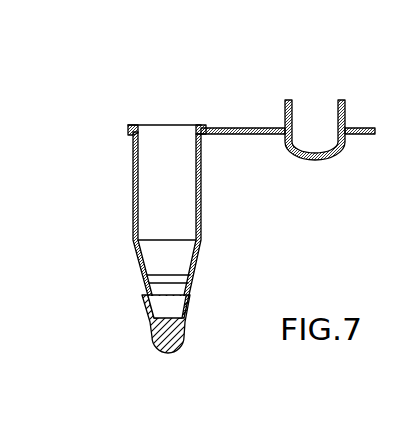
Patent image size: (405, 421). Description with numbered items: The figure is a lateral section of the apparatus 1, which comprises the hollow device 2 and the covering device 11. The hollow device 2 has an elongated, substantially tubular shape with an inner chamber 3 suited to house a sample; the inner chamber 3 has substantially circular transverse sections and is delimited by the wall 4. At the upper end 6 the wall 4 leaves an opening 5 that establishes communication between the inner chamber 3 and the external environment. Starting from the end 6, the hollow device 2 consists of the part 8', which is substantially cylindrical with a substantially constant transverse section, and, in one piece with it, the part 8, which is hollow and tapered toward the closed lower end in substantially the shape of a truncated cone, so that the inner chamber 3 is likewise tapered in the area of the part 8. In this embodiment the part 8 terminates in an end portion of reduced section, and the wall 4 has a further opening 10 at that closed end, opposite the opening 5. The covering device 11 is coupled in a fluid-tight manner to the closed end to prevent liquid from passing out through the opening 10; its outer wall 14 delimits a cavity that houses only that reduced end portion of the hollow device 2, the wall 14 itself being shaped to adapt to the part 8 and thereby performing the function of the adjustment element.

The apparatus 1 is at (138, 111).
The hollow device 2 is at (101, 208).
The inner chamber 3 is at (141, 165).
The wall 4 is at (201, 208).
The opening 5 is at (196, 121).
The end 6 is at (126, 122).
The part 8 is at (196, 319).
The part 8' is at (110, 225).
The further opening 10 is at (170, 313).
The covering device 11 is at (169, 360).
The outer wall 14 is at (160, 337).